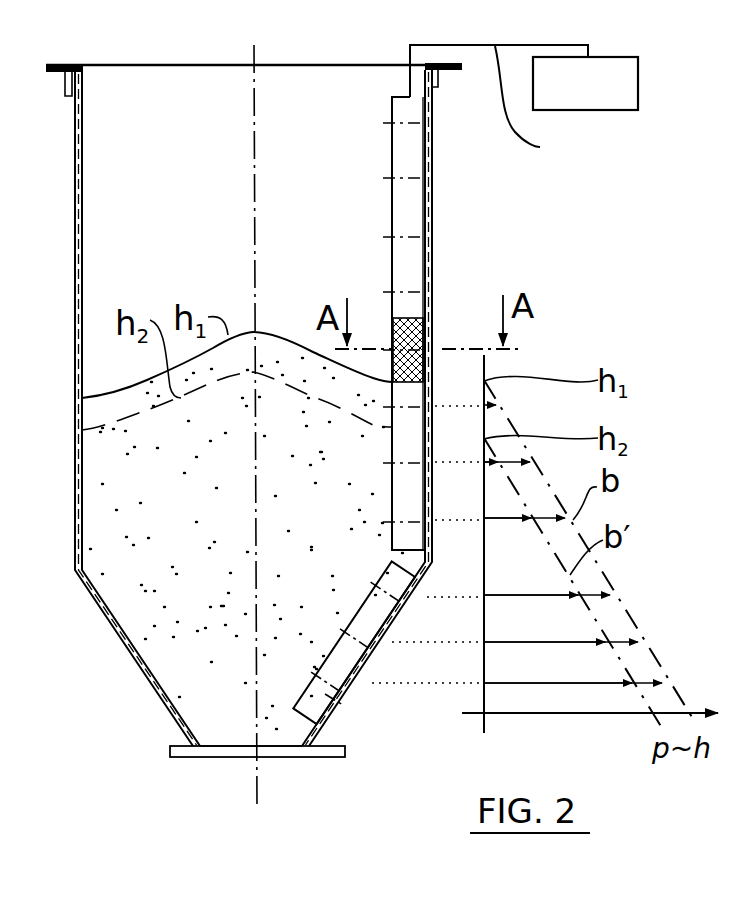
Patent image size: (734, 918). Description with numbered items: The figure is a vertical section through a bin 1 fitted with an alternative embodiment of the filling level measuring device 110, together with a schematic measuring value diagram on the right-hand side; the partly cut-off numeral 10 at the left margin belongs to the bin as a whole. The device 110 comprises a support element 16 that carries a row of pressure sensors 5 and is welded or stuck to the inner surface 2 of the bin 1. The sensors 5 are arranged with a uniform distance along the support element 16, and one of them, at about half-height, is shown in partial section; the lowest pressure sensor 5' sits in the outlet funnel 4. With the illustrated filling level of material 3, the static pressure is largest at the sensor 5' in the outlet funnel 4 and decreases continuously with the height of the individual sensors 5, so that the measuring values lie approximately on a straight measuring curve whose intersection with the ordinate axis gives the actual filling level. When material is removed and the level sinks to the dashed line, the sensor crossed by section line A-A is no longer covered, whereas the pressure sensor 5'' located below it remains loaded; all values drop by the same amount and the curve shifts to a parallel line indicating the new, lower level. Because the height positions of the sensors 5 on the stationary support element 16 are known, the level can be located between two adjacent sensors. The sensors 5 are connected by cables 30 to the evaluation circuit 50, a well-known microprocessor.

The bulk material container 10 is at (231, 410).
The bin 1 is at (74, 339).
The inner surface of the bin 2 is at (82, 377).
The material 3 is at (112, 475).
The outlet funnel 4 is at (338, 722).
The pressure sensors 5 is at (425, 407).
The lowest pressure sensor 5' is at (371, 726).
The pressure sensor below section line A-A 5'' is at (435, 389).
The support element 16 is at (433, 193).
The cables 30 is at (543, 106).
The evaluation circuit 50 is at (590, 110).
The device 110 is at (388, 158).